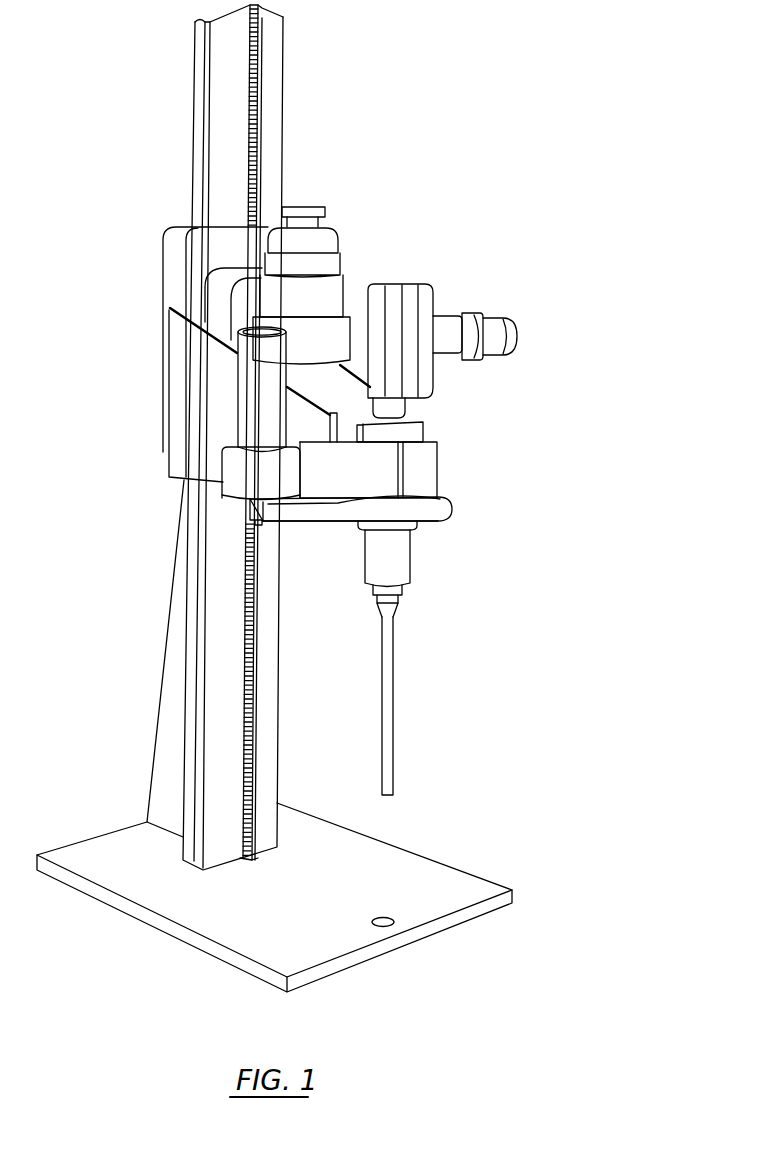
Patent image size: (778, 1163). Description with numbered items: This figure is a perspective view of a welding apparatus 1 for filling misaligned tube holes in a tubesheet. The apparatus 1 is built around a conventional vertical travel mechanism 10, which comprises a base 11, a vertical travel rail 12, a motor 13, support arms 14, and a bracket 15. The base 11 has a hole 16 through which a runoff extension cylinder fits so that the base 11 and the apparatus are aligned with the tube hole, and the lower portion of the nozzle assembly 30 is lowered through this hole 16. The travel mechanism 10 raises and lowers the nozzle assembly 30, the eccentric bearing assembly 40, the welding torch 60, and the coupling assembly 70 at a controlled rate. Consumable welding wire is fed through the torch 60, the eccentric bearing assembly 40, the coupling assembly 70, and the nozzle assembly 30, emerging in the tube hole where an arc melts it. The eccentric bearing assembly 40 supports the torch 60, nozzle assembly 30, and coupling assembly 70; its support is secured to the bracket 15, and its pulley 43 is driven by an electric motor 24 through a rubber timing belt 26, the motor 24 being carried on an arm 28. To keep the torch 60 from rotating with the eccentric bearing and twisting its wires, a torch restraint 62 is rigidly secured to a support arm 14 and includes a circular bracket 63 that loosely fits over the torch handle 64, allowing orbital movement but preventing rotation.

The welding apparatus 1 is at (529, 207).
The vertical travel mechanism 10 is at (114, 258).
The base 11 is at (473, 888).
The vertical travel rail 12 is at (193, 508).
The motor 13 is at (335, 227).
The support arms 14 is at (333, 383).
The bracket 15 is at (343, 433).
The hole 16 is at (387, 915).
The electric motor 24 is at (250, 413).
The rubber timing belt 26 is at (327, 520).
The arm 28 is at (320, 468).
The nozzle assembly 30 is at (450, 683).
The eccentric bearing assembly 40 is at (482, 455).
The pulley 43 is at (418, 500).
The welding torch 60 is at (479, 295).
The torch restraint 62 is at (367, 332).
The circular bracket 63 is at (497, 320).
The torch handle 64 is at (500, 350).
The coupling assembly 70 is at (455, 553).